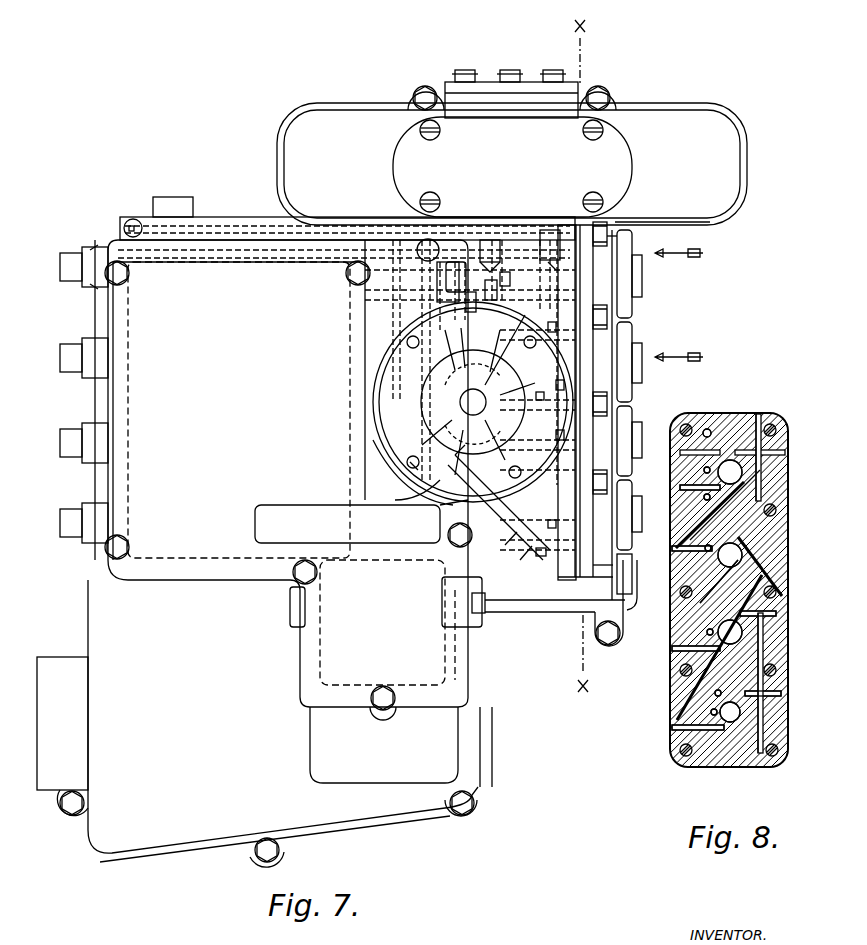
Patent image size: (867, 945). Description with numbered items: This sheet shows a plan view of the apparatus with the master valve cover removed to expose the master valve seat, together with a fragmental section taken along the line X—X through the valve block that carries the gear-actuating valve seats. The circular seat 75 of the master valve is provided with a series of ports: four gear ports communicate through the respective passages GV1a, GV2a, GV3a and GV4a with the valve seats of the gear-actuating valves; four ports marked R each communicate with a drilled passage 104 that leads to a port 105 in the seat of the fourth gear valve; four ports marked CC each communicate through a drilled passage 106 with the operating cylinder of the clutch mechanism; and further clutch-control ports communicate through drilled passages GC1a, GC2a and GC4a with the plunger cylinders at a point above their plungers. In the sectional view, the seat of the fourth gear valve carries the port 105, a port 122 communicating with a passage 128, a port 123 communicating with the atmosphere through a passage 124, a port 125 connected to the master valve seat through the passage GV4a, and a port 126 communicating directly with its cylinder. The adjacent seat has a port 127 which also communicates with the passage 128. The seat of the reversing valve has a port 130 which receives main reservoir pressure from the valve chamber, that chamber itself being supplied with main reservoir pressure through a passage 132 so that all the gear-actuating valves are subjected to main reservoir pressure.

In FIG. 7, the seat 75 is at (417, 428).
In FIG. 7, the drilled passage 104 is at (455, 286).
In FIG. 8, the drilled passage 104 is at (675, 420).
In FIG. 8, the port 105 is at (720, 450).
In FIG. 7, the drilled passage 106 is at (462, 312).
In FIG. 8, the passage 132 is at (708, 428).
In FIG. 8, the passage 128 is at (793, 442).
In FIG. 8, the port 126 is at (704, 470).
In FIG. 8, the port 125 is at (700, 490).
In FIG. 8, the passage 124 is at (690, 536).
In FIG. 8, the port 127 is at (718, 612).
In FIG. 8, the port 130 is at (712, 693).
In FIG. 8, the port 122 is at (750, 550).
In FIG. 8, the port 123 is at (719, 520).
In FIG. 7, the passage GV4a is at (540, 288).
In FIG. 8, the passage GV4a is at (680, 490).
In FIG. 7, the passage GV3a is at (548, 378).
In FIG. 8, the passage GV3a is at (682, 566).
In FIG. 7, the passage GV2a is at (568, 448).
In FIG. 8, the passage GV2a is at (680, 660).
In FIG. 7, the passage GV1a is at (548, 540).
In FIG. 8, the passage GV1a is at (690, 735).
In FIG. 7, the drilled passage GC4a is at (555, 326).
In FIG. 7, the drilled passage GC2a is at (555, 400).
In FIG. 7, the drilled passage GC1a is at (548, 498).